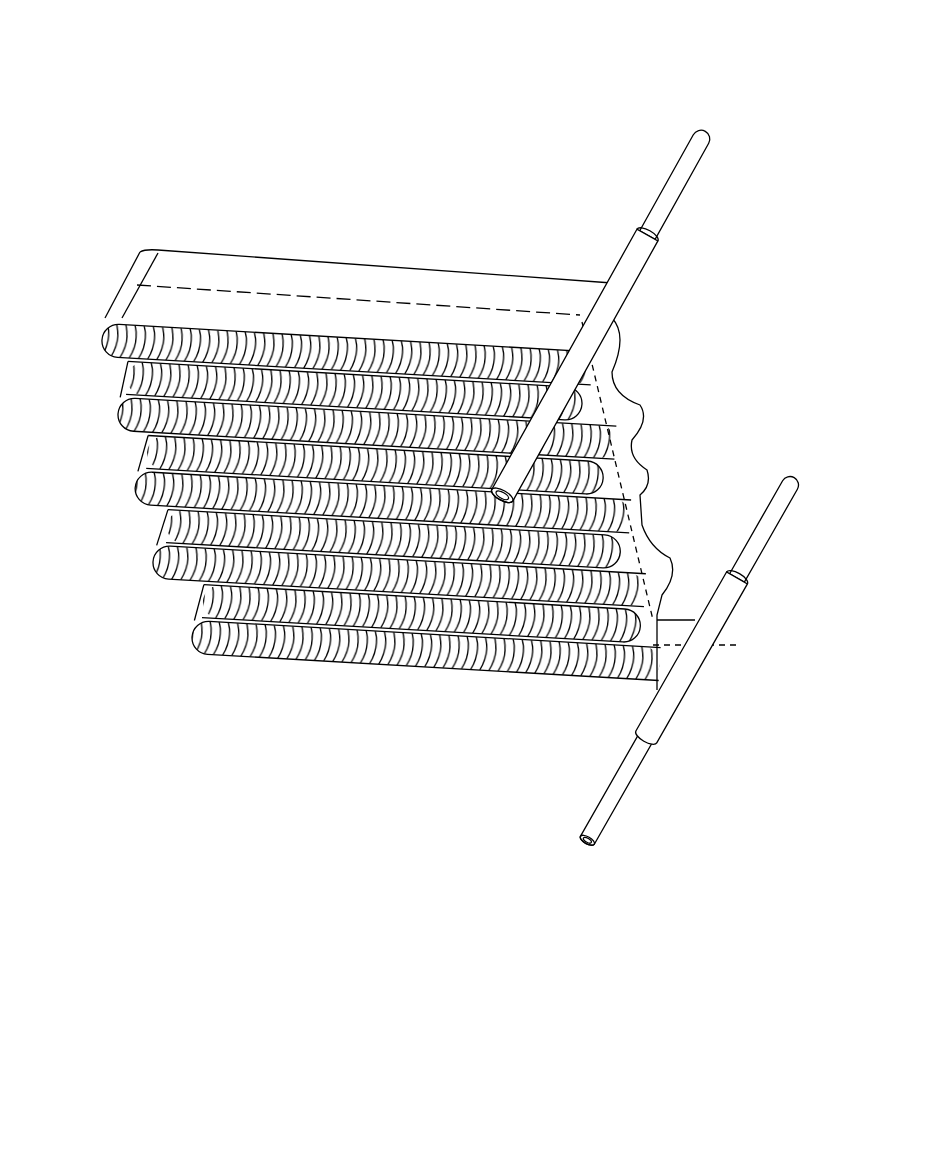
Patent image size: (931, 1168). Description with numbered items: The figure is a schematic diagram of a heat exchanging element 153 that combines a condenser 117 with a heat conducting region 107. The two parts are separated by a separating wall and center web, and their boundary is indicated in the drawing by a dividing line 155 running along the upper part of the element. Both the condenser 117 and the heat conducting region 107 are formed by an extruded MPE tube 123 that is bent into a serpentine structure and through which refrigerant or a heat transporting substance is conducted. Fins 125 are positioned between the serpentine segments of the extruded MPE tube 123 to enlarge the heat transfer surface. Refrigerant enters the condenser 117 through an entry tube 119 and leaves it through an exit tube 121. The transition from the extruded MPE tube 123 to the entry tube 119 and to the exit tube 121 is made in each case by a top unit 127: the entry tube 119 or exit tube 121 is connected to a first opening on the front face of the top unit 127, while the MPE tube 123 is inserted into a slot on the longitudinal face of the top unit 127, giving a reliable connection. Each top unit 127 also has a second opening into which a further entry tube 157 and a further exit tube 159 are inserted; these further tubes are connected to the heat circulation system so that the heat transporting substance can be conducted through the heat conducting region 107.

The heat exchanging element 153 is at (434, 119).
The heat conducting region 107 is at (613, 269).
The dividing line 155 is at (350, 298).
The condenser 117 is at (103, 288).
The entry tube 119 is at (533, 440).
The extruded MPE tube 123 is at (653, 490).
The fins 125 is at (135, 490).
The further entry tube 157 is at (690, 163).
The further exit tube 159 is at (752, 550).
The top unit 127 is at (623, 274).
The exit tube 121 is at (598, 820).